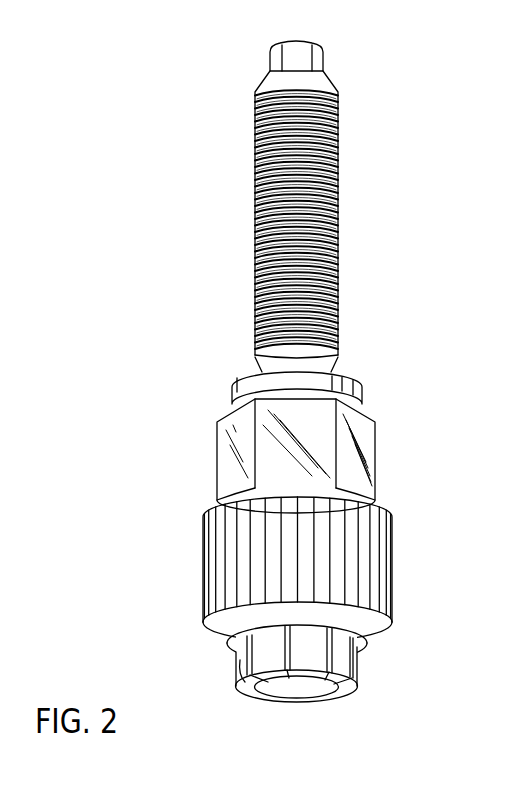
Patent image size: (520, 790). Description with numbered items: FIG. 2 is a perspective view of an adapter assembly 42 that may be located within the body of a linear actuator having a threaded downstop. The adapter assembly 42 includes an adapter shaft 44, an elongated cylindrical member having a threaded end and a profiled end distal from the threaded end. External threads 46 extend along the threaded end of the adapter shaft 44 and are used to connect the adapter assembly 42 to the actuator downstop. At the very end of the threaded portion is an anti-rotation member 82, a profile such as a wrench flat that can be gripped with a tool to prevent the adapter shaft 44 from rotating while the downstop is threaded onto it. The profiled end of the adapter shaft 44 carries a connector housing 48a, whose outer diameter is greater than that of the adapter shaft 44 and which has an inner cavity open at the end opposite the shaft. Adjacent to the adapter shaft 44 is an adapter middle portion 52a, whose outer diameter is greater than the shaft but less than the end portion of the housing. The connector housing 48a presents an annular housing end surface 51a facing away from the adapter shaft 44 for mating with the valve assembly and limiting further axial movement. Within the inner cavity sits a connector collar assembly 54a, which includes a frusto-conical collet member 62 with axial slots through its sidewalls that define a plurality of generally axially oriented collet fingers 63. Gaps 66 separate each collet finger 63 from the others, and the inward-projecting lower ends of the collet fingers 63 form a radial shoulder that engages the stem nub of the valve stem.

The adapter assembly 42 is at (165, 266).
The anti-rotation member 82 is at (300, 57).
The adapter shaft 44 is at (338, 205).
The external threads 46 is at (338, 168).
The adapter middle portion 52a is at (363, 432).
The connector housing 48a is at (355, 550).
The housing end surface 51a is at (363, 647).
The collet member 62 is at (364, 687).
The collet fingers 63 is at (343, 662).
The connector collar assembly 54a is at (268, 663).
The gaps 66 is at (257, 705).